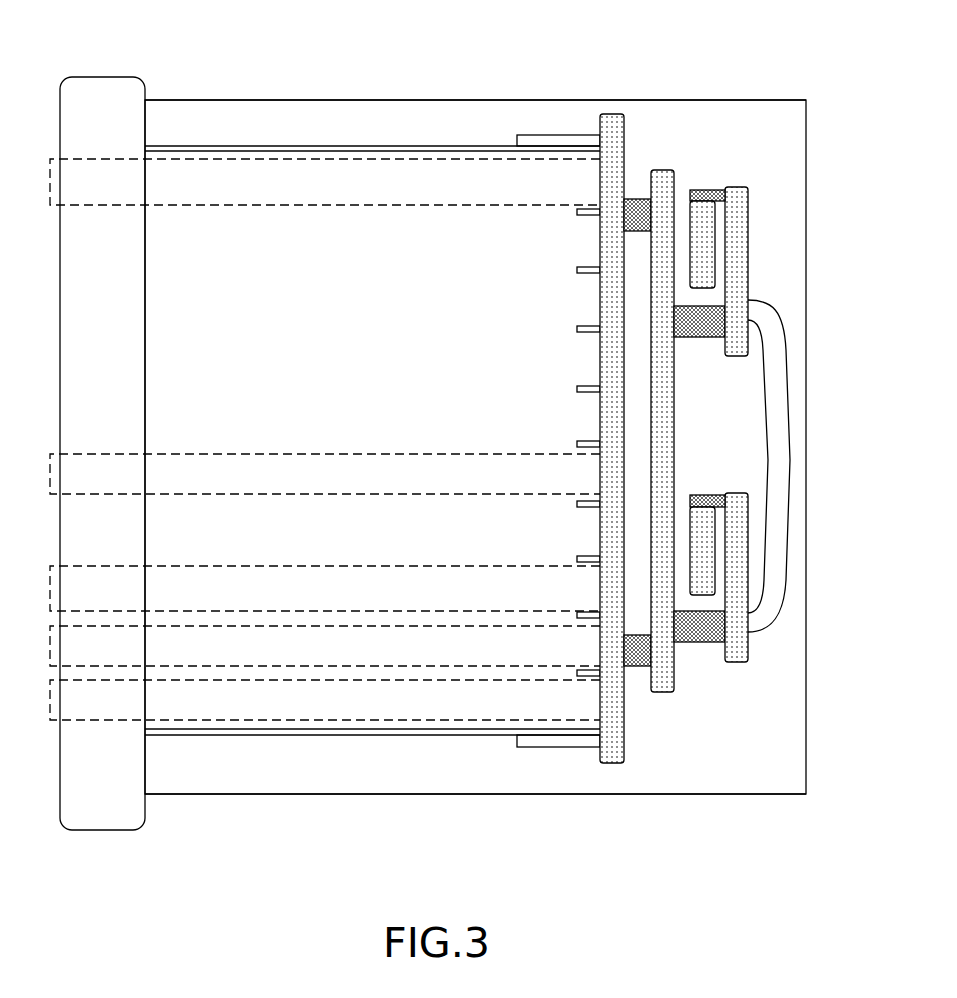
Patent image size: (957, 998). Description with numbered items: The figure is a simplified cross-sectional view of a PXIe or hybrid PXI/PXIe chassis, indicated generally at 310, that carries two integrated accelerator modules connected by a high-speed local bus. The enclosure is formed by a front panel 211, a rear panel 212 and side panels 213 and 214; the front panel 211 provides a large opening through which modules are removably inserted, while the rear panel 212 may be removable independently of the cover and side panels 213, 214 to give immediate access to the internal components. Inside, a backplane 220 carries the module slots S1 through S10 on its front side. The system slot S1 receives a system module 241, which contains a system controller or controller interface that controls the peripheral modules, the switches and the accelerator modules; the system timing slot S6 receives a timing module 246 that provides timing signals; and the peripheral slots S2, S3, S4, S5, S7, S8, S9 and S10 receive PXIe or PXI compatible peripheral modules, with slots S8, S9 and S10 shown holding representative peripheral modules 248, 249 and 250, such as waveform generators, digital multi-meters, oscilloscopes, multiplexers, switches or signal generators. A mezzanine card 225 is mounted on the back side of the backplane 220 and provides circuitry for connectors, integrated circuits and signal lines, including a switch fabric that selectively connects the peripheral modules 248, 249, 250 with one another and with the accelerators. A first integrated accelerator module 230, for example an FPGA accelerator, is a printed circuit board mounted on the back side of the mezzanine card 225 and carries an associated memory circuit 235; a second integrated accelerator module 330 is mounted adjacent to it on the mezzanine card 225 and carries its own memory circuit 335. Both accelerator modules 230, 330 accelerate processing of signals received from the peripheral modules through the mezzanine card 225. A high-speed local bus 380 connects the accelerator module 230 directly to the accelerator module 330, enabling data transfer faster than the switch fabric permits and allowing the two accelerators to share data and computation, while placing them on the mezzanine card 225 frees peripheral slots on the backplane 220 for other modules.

The front panel 211 is at (107, 812).
The rear panel 212 is at (806, 775).
The side panel 213 is at (260, 795).
The side panel 214 is at (233, 100).
The backplane 220 is at (624, 731).
The mezzanine card 225 is at (674, 368).
The integrated accelerator module 230 is at (748, 643).
The memory circuit 235 is at (694, 531).
The system module 241 is at (320, 193).
The timing module 246 is at (320, 483).
The peripheral module 248 is at (320, 597).
The peripheral module 249 is at (320, 655).
The peripheral module 250 is at (320, 710).
The sensing assembly 310 is at (562, 66).
The integrated accelerator module 330 is at (748, 215).
The memory circuit 335 is at (694, 226).
The high-speed local bus 380 is at (782, 438).
The system slot S1 is at (600, 182).
The peripheral slot S2 is at (600, 247).
The peripheral slot S3 is at (600, 305).
The peripheral slot S4 is at (600, 369).
The peripheral slot S5 is at (600, 424).
The system timing slot S6 is at (600, 475).
The peripheral slot S7 is at (600, 535).
The peripheral slot S8 is at (600, 590).
The peripheral slot S9 is at (600, 650).
The peripheral slot S10 is at (600, 705).